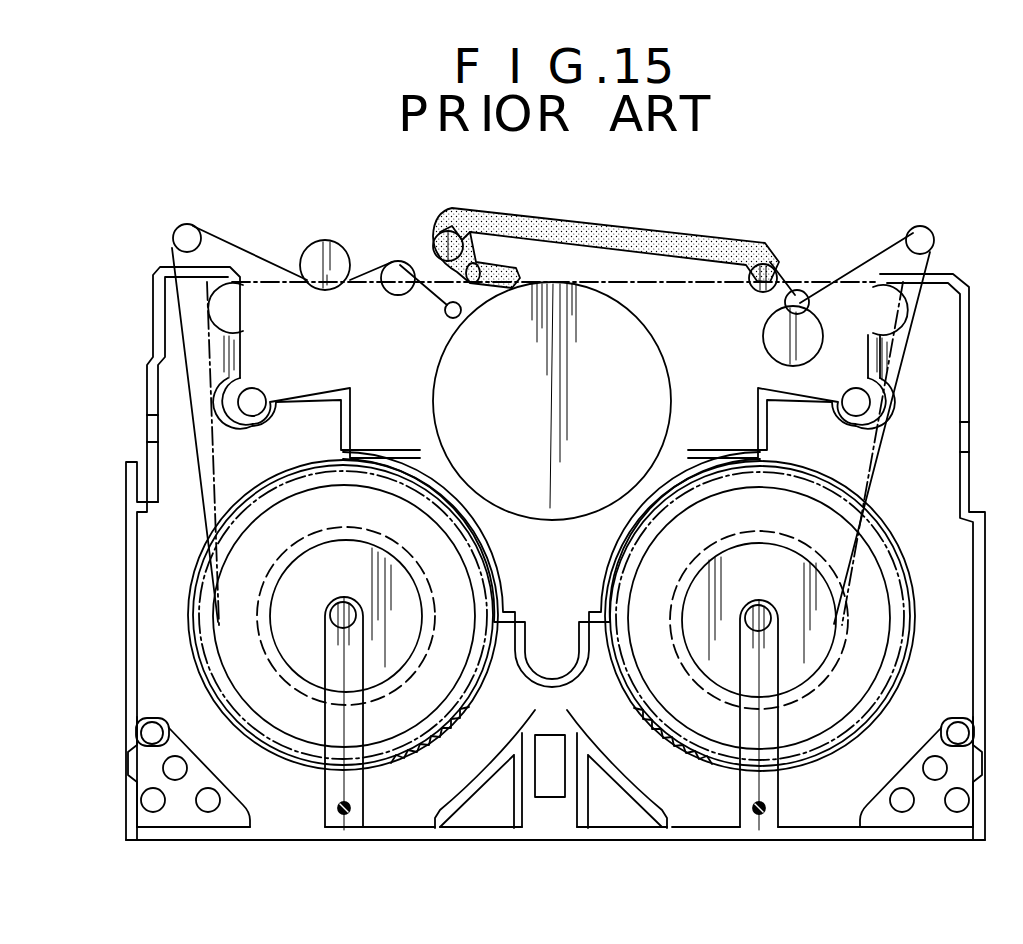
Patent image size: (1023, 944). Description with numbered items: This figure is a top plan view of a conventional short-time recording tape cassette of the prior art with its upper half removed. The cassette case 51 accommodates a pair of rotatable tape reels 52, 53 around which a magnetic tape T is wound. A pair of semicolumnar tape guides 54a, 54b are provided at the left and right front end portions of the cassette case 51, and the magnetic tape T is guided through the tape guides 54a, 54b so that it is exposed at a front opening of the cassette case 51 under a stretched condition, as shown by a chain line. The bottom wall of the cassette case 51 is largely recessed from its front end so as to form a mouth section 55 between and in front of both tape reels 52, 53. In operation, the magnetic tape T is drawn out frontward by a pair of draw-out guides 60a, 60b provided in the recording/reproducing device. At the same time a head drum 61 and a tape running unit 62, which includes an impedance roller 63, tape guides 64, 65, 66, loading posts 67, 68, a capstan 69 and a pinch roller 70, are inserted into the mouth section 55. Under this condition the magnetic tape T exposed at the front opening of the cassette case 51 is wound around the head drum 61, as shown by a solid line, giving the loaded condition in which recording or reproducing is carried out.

The cassette case 51 is at (568, 843).
The tape reel 52 is at (307, 743).
The tape reel 53 is at (823, 733).
The tape guide 54a is at (233, 303).
The tape guide 54b is at (883, 305).
The mouth section 55 is at (693, 347).
The draw-out guide 60a is at (187, 230).
The draw-out guide 60b is at (932, 237).
The head drum 61 is at (618, 323).
The tape running unit 62 is at (420, 230).
The impedance roller 63 is at (318, 243).
The tape guide 64 is at (395, 262).
The tape guide 65 is at (444, 312).
The tape guide 66 is at (772, 272).
The loading post 67 is at (500, 265).
The loading post 68 is at (458, 222).
The capstan 69 is at (800, 293).
The pinch roller 70 is at (772, 345).
The magnetic tape T is at (228, 620).